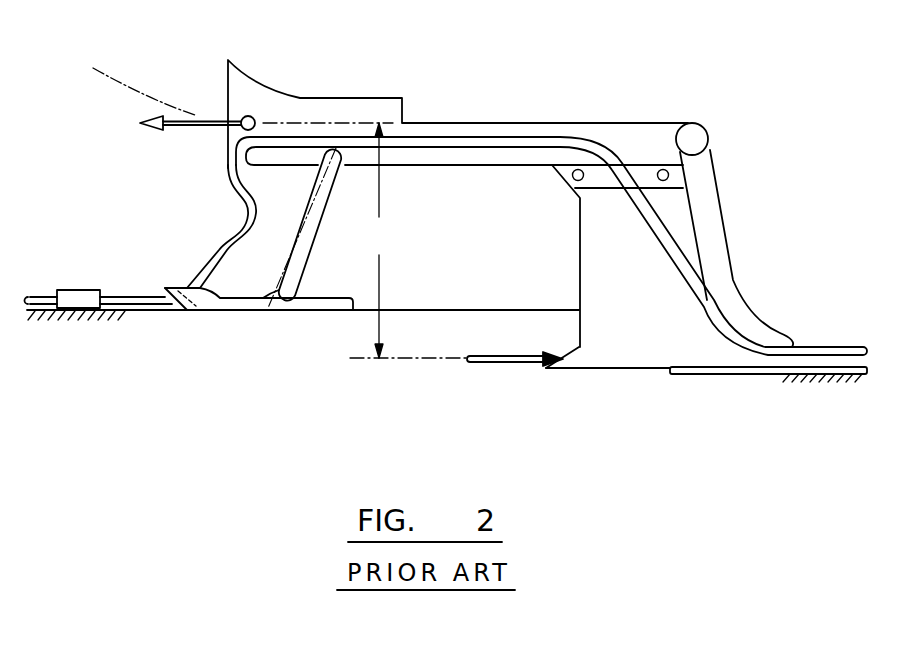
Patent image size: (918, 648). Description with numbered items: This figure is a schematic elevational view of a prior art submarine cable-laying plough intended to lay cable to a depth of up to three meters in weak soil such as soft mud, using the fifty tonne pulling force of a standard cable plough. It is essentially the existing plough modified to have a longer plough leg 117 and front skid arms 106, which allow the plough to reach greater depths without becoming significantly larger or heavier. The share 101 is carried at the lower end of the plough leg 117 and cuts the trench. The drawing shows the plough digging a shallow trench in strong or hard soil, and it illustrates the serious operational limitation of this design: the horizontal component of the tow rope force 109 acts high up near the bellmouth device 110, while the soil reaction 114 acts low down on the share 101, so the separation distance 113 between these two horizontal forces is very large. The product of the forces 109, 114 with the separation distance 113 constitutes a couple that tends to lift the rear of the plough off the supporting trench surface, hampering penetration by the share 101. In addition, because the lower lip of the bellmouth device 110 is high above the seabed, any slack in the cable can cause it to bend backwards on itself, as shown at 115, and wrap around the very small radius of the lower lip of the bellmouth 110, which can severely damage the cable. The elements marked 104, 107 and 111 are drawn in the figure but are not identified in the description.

The share 101 is at (630, 320).
The shoe 104 is at (192, 300).
The front skid arms 106 is at (299, 262).
The lower corner of body 107 is at (568, 362).
The tow rope force 109 is at (175, 112).
The bellmouth device 110 is at (263, 100).
The slider on rod 111 is at (78, 300).
The separation distance 113 is at (408, 240).
The soil reaction 114 is at (497, 362).
The cable bend 115 is at (216, 260).
The plough leg 117 is at (607, 260).